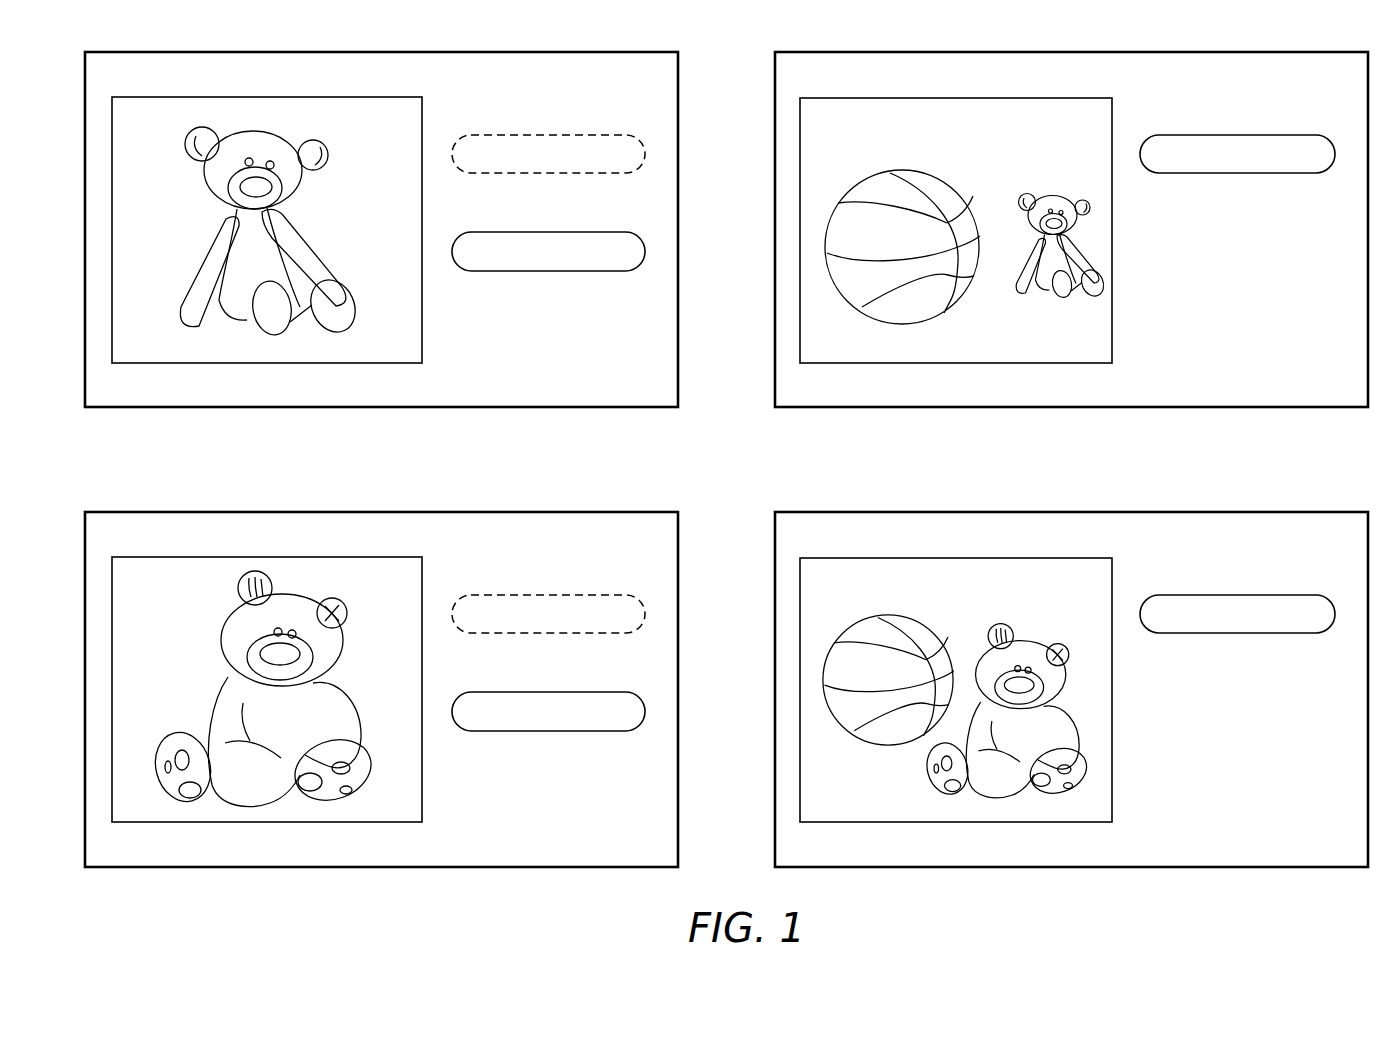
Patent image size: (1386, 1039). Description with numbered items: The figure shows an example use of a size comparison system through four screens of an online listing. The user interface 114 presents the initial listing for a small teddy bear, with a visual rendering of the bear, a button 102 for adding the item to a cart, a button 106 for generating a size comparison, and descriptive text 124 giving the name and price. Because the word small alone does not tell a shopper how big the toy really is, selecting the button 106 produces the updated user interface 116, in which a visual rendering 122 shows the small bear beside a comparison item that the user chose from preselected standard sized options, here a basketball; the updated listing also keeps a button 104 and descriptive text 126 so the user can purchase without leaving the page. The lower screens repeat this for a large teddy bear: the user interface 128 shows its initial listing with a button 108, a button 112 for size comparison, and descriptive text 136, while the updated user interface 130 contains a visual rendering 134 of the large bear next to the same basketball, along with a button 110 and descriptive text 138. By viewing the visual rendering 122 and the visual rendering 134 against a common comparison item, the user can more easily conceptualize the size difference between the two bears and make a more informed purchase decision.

The button 102 is at (520, 133).
The button 104 is at (1210, 133).
The button 106 is at (520, 232).
The add to cart button (dashed) 108 is at (520, 593).
The add to cart button 110 is at (1210, 593).
The button 112 is at (520, 692).
The user interface 114 is at (603, 52).
The user interface 116 is at (1293, 52).
The visual rendering 122 is at (870, 97).
The product description text 124 is at (493, 342).
The product description text 126 is at (1255, 293).
The user interface 128 is at (603, 512).
The user interface 130 is at (1293, 512).
The visual rendering 134 is at (870, 558).
The descriptive text 136 is at (493, 802).
The product description text 138 is at (1255, 753).